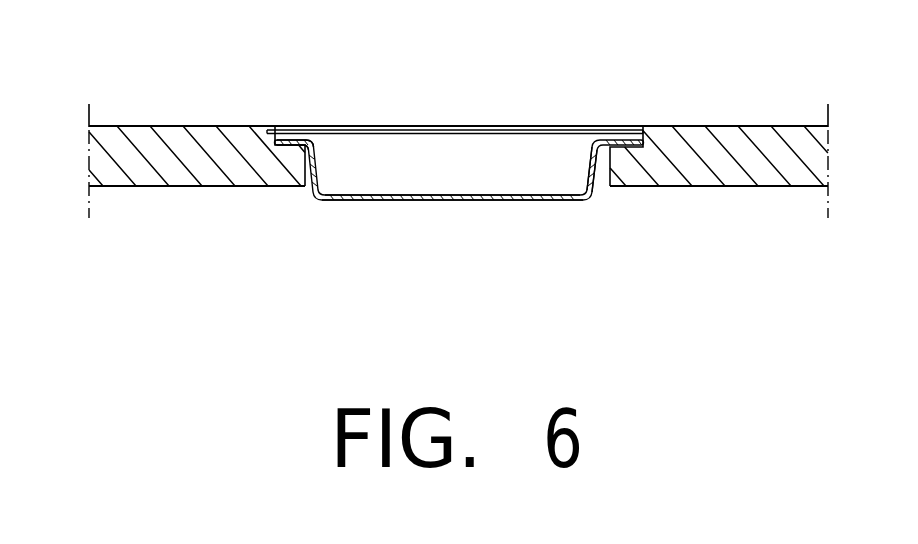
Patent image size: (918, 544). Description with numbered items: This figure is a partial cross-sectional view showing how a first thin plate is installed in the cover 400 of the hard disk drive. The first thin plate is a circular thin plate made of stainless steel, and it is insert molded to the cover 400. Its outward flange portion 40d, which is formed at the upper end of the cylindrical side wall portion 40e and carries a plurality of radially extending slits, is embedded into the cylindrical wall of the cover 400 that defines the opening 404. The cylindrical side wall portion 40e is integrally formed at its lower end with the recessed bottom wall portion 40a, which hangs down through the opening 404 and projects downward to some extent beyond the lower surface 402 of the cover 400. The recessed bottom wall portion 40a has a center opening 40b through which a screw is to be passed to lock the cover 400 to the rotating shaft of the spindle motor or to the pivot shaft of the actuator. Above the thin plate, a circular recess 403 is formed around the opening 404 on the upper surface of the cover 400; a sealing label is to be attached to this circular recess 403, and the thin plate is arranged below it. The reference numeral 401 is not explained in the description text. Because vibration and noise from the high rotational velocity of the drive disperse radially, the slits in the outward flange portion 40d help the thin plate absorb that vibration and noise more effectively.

The cover 400 is at (216, 148).
The upper surface of board 401 is at (732, 127).
The lower surface of the cover 402 is at (738, 186).
The circular recess 403 is at (632, 128).
The opening 404 is at (307, 180).
The recessed bottom wall portion 40a is at (403, 200).
The center opening 40b is at (453, 193).
The outward flange portion 40d is at (629, 186).
The cylindrical side wall portion 40e is at (328, 150).